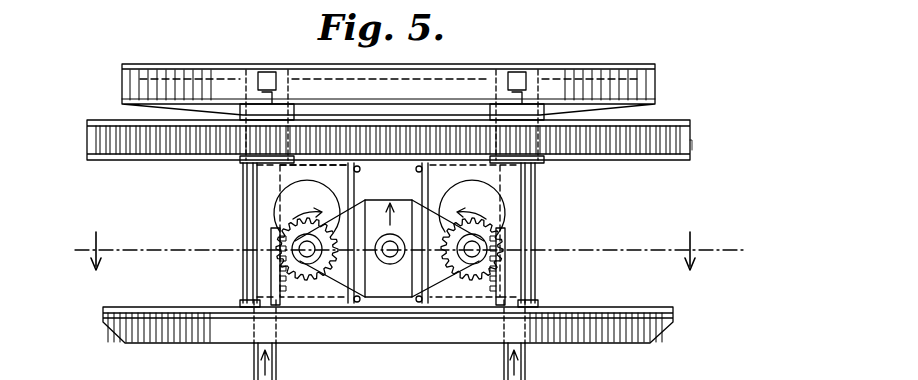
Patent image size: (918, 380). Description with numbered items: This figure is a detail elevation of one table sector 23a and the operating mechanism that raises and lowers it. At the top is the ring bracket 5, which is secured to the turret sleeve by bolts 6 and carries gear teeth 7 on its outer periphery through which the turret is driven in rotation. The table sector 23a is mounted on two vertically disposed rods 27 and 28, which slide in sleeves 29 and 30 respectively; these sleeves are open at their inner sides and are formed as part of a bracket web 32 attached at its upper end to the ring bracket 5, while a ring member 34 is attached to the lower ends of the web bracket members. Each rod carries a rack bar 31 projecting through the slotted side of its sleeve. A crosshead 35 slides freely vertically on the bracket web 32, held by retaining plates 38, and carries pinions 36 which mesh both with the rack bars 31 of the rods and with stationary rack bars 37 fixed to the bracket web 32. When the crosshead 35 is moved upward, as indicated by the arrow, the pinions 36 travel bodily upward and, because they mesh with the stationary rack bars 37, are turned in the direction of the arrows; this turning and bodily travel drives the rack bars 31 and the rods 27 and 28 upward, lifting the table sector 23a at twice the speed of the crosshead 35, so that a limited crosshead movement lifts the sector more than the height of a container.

The ring bracket 5 is at (632, 160).
The bolts 6 is at (396, 251).
The gear teeth 7 is at (688, 138).
The table sector 23a is at (635, 88).
The rod 27 is at (253, 360).
The rod 28 is at (526, 358).
The sleeve 29 is at (262, 201).
The sleeve 30 is at (534, 188).
The rack bar 31 is at (500, 233).
The bracket web 32 is at (308, 172).
The ring member 34 is at (576, 310).
The crosshead 35 is at (395, 300).
The pinions 36 is at (492, 268).
The stationary rack bars 37 is at (389, 206).
The retaining plates 38 is at (450, 345).